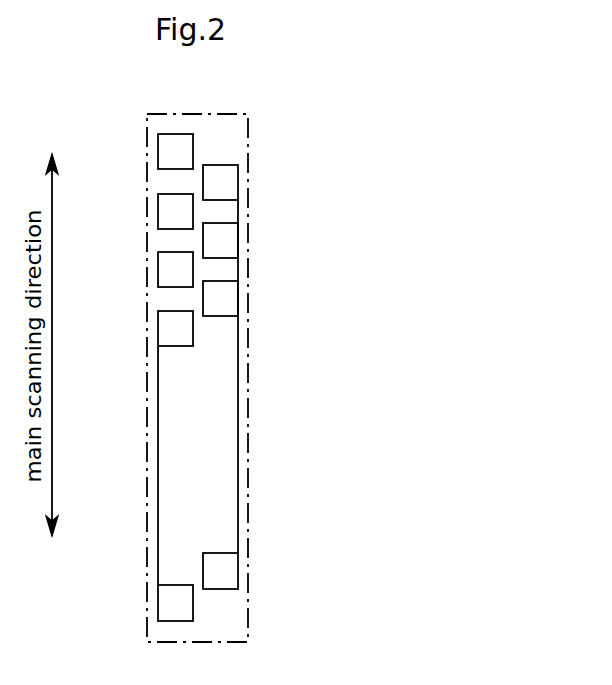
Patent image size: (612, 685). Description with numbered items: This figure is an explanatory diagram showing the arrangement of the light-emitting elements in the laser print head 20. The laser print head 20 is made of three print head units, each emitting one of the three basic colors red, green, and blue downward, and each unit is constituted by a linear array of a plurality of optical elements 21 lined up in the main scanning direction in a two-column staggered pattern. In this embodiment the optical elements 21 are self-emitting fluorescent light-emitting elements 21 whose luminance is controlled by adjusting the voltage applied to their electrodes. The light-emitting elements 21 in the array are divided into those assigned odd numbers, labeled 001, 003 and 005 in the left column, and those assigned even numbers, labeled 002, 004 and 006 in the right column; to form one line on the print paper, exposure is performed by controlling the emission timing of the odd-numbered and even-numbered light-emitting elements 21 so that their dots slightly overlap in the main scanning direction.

The laser print head 20 is at (248, 393).
The light-emitting element 21 is at (209, 357).
The nozzle 001 is at (163, 153).
The nozzle 002 is at (233, 187).
The nozzle 003 is at (163, 213).
The nozzle 004 is at (233, 247).
The nozzle 005 is at (163, 273).
The nozzle 006 is at (233, 305).